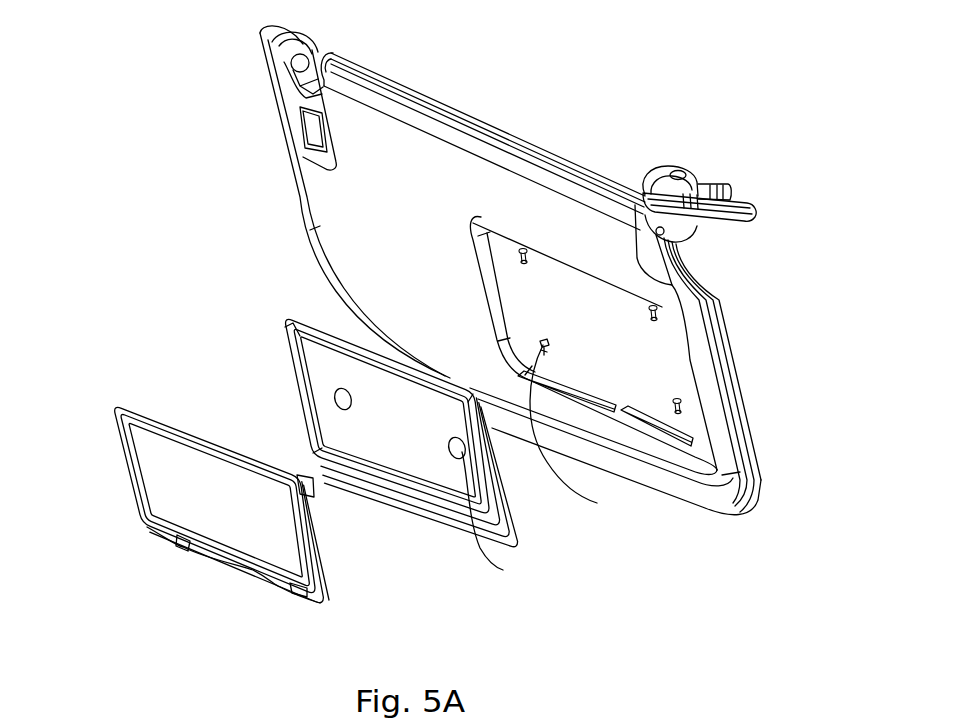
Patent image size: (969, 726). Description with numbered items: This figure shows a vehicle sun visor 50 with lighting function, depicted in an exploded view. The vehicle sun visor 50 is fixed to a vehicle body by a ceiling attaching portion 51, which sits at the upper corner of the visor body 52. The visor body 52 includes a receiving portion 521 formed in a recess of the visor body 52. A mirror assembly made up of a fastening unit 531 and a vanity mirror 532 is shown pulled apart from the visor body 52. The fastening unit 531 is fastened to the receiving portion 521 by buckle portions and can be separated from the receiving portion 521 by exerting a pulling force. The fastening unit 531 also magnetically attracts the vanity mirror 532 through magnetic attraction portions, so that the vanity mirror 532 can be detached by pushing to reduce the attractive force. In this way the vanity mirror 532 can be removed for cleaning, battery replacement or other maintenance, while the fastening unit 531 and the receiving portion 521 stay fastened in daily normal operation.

The vehicle sun visor 50 is at (692, 105).
The ceiling attaching portion 51 is at (730, 194).
The visor body 52 is at (470, 113).
The receiving portion 521 is at (662, 360).
The fastening unit 531 is at (307, 362).
The vanity mirror 532 is at (157, 463).